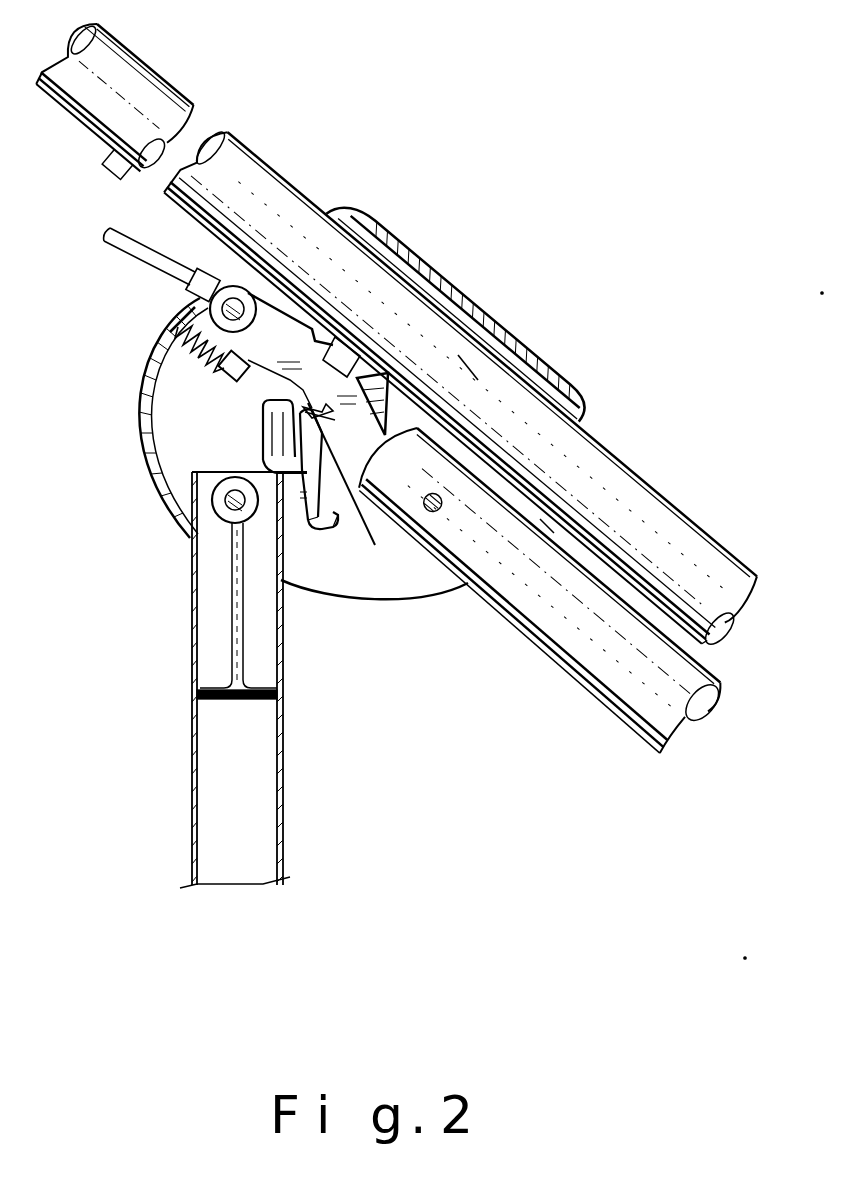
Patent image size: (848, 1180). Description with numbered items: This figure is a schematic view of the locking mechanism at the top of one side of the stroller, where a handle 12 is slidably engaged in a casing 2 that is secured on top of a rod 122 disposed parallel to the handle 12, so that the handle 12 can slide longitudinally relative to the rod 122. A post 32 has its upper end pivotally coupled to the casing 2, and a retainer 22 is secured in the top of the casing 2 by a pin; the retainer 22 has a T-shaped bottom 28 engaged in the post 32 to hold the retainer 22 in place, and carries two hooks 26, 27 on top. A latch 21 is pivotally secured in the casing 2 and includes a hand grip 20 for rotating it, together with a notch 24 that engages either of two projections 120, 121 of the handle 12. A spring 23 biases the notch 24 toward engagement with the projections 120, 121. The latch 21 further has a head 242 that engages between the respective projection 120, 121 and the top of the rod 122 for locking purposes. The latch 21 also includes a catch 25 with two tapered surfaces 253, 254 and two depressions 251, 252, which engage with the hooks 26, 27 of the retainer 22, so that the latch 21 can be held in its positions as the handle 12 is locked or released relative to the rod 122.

The casing 2 is at (437, 580).
The handle 12 is at (507, 395).
The projection 121 is at (116, 172).
The rod 122 is at (603, 707).
The hand grip 20 is at (137, 265).
The latch 21 is at (278, 345).
The retainer 22 is at (215, 507).
The spring 23 is at (180, 348).
The notch 24 is at (323, 350).
The catch 25 is at (316, 408).
The hook 26 is at (263, 443).
The hook 27 is at (308, 528).
The T-shaped bottom 28 is at (237, 603).
The post 32 is at (190, 757).
The projection 120 is at (316, 410).
The head 242 is at (468, 362).
The depression 251 is at (300, 392).
The depression 252 is at (314, 413).
The tapered surface 253 is at (318, 522).
The tapered surface 254 is at (345, 528).